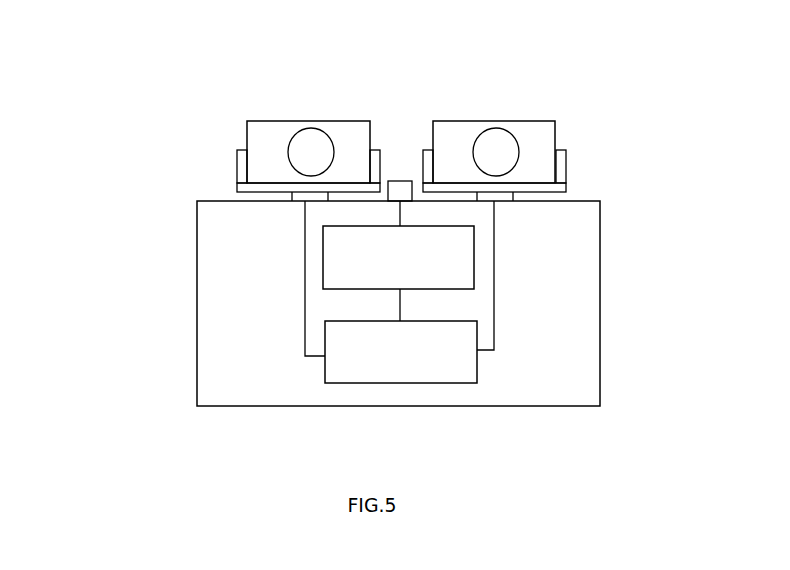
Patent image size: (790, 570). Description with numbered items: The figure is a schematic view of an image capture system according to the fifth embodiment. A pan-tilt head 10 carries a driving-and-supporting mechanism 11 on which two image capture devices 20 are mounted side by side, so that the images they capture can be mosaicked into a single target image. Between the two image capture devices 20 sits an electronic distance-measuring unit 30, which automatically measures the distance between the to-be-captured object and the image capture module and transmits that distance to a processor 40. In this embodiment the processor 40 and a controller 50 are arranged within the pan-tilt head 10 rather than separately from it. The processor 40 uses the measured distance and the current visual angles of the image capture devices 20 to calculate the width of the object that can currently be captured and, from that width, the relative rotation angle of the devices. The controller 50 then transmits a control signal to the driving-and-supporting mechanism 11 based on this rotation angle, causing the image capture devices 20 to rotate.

The pan-tilt head 10 is at (197, 247).
The driving-and-supporting mechanism 11 is at (238, 163).
The image capture device 20 is at (348, 121).
The electronic distance-measuring unit 30 is at (392, 182).
The processor 40 is at (474, 247).
The controller 50 is at (477, 366).